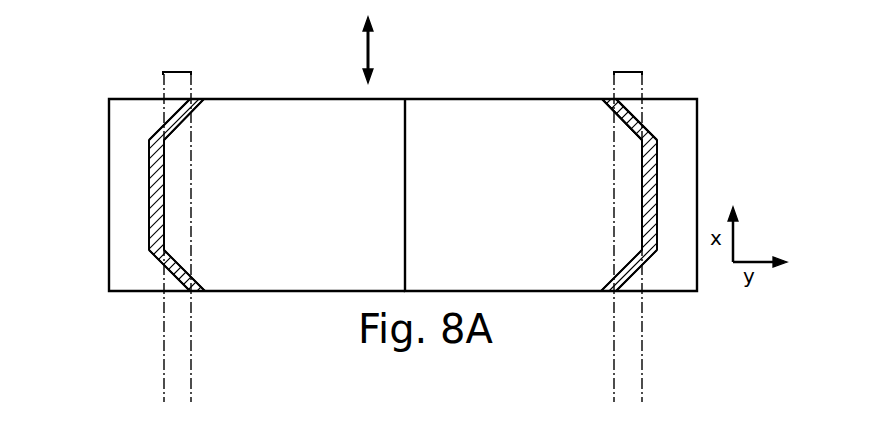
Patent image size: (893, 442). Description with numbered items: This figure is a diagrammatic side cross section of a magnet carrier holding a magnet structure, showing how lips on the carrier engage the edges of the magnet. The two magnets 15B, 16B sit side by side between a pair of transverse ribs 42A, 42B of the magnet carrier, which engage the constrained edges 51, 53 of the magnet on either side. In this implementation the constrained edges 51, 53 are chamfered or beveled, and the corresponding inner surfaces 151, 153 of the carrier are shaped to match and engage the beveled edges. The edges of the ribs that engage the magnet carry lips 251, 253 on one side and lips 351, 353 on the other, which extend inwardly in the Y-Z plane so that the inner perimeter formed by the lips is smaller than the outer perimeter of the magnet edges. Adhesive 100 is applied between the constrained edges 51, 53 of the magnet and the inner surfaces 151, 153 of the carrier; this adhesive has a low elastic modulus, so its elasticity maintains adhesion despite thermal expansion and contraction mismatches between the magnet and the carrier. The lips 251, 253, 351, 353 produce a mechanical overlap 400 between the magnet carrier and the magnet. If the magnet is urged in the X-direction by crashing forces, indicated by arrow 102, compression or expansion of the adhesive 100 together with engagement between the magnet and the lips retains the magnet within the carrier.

The transverse rib 42A is at (108, 157).
The transverse rib 42B is at (697, 117).
The magnet 15B is at (340, 193).
The magnet 16B is at (504, 193).
The constrained edge of the magnet 51 is at (166, 200).
The constrained edge of the magnet 53 is at (642, 205).
The inner surface of the magnet carrier 151 is at (150, 207).
The inner surface of the magnet carrier 153 is at (617, 102).
The lip 251 is at (170, 105).
The lip 253 is at (637, 99).
The lip 351 is at (172, 285).
The lip 353 is at (628, 283).
The adhesive 100 is at (195, 104).
The mechanical overlap 400 is at (183, 71).
The arrow indicating crashing forces 102 is at (371, 48).